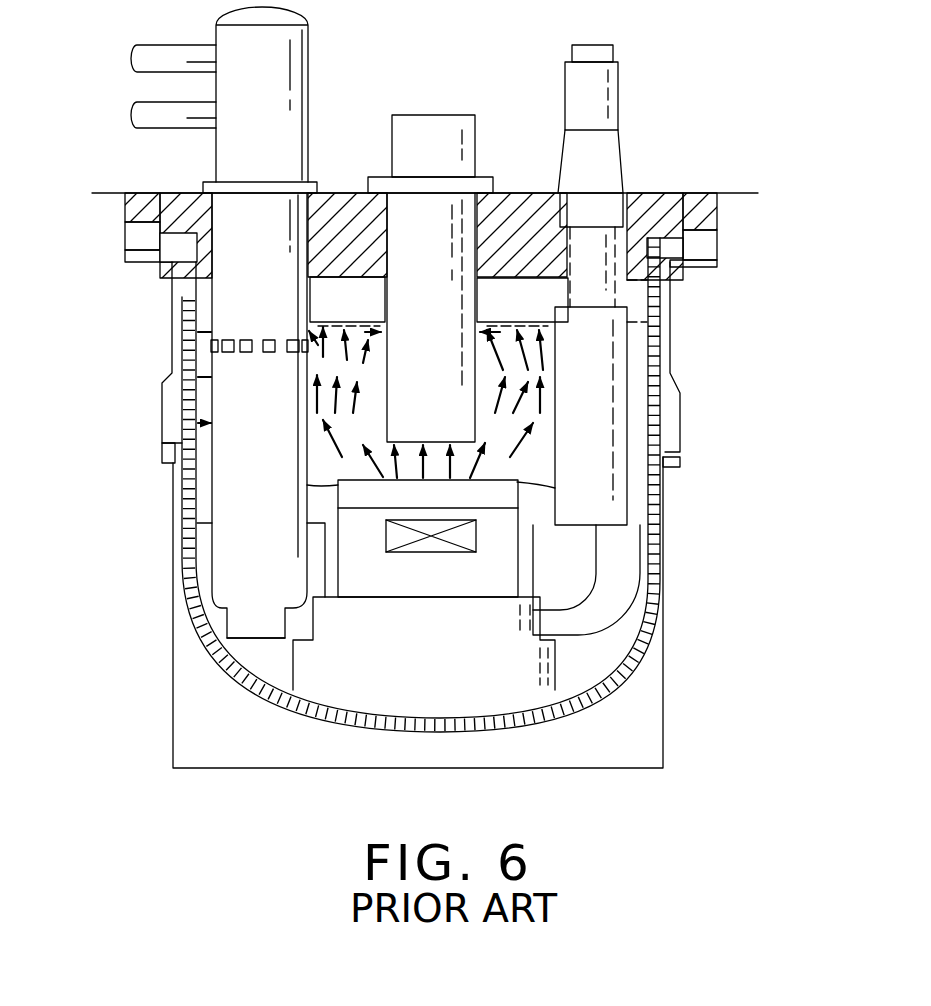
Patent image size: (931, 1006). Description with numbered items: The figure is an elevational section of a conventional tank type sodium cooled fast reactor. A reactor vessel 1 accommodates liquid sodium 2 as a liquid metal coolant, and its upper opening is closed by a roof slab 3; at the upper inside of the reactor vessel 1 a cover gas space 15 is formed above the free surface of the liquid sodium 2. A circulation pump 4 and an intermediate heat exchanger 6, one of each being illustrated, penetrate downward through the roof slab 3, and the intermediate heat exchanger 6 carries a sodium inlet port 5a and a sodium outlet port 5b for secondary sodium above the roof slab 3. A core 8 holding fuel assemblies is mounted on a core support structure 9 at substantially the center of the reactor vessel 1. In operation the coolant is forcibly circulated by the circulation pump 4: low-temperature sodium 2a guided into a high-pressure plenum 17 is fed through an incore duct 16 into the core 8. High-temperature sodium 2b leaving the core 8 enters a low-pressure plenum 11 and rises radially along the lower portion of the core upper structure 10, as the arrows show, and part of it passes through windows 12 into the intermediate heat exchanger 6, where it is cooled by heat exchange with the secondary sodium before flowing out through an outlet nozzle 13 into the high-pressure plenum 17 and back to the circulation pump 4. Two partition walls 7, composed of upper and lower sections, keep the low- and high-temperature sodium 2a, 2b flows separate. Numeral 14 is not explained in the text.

The reactor vessel 1 is at (663, 516).
The liquid sodium 2 is at (632, 595).
The low-temperature sodium 2a is at (607, 633).
The high-temperature sodium 2b is at (322, 442).
The roof slab 3 is at (532, 193).
The circulation pump 4 is at (622, 158).
The sodium inlet port 5a is at (150, 45).
The sodium outlet port 5b is at (157, 102).
The intermediate heat exchanger 6 is at (310, 67).
The partition walls 7 is at (190, 497).
The core 8 is at (428, 538).
The core support structure 9 is at (520, 688).
The core upper structure 10 is at (440, 117).
The low-pressure plenum 11 is at (543, 423).
The windows 12 is at (248, 340).
The outlet nozzle 13 is at (247, 622).
The upper plenum partition 14 is at (368, 316).
The cover gas space 15 is at (533, 310).
The incore duct 16 is at (600, 572).
The high-pressure plenum 17 is at (260, 655).